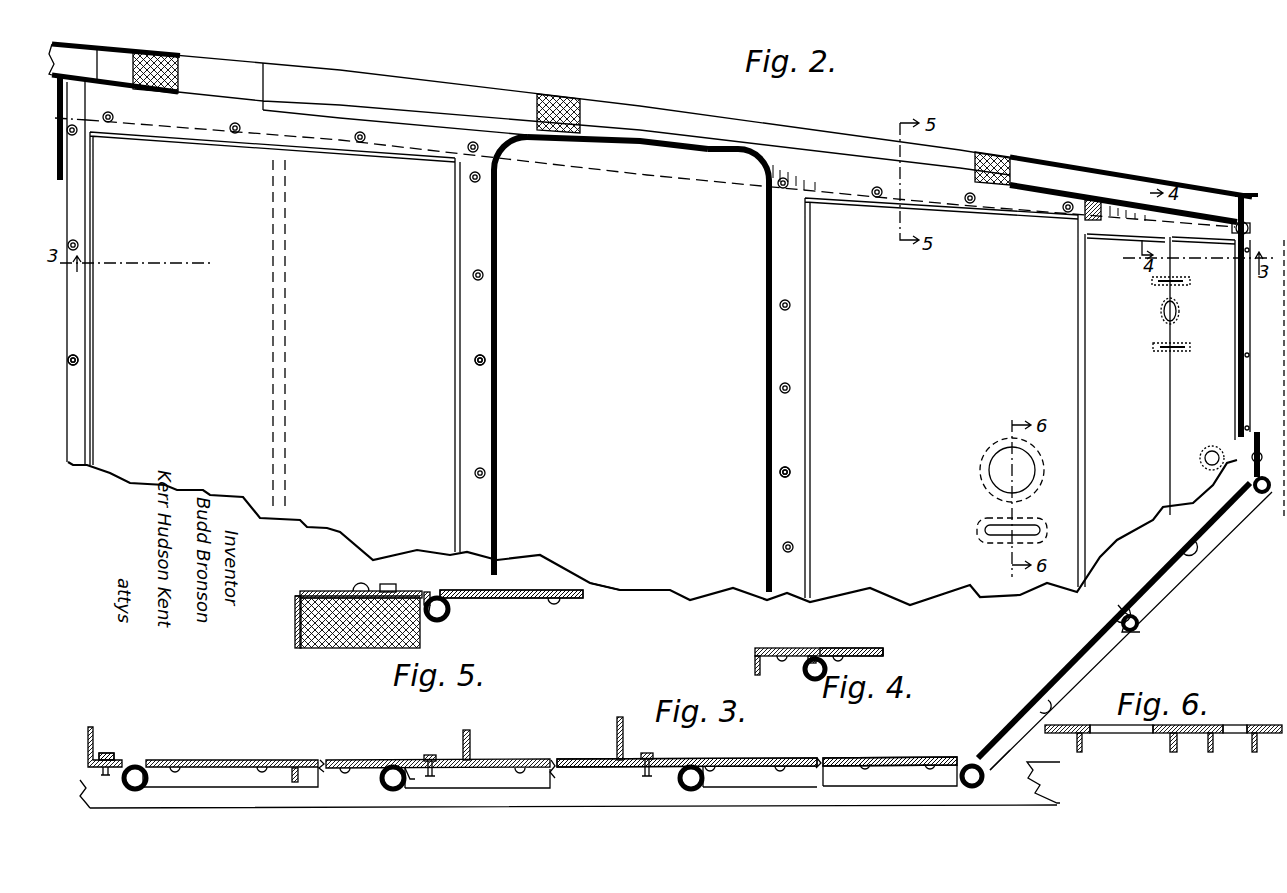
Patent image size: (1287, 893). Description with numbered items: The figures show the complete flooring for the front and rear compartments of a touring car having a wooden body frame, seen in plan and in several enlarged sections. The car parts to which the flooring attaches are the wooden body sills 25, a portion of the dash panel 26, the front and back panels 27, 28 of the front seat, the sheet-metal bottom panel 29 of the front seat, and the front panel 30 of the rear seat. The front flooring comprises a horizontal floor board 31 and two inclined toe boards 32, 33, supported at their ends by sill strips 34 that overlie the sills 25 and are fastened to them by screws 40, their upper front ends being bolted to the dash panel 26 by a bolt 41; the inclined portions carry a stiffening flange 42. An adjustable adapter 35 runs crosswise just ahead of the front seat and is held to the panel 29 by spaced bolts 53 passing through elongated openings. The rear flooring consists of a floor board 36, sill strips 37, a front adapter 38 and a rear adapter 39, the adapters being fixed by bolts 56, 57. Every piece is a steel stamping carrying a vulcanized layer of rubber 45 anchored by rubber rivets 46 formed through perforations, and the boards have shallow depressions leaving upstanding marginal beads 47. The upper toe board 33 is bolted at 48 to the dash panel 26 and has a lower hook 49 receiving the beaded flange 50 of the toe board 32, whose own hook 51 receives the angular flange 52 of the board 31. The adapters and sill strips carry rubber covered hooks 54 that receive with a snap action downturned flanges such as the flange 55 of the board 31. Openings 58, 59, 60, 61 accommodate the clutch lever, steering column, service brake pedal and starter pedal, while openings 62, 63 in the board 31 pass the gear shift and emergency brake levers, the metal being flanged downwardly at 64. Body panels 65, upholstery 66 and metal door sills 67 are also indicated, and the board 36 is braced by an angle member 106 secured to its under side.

In FIG. 2, the wooden body sills 25 is at (697, 180).
In FIG. 3, the wooden body sills 25 is at (1038, 780).
In FIG. 5, the wooden body sills 25 is at (326, 643).
In FIG. 2, the dash panel 26 is at (1239, 388).
In FIG. 2, the front panel for the front seat 27 is at (766, 450).
In FIG. 3, the front panel for the front seat 27 is at (616, 737).
In FIG. 2, the back panel for the front seat 28 is at (503, 455).
In FIG. 3, the back panel for the front seat 28 is at (478, 740).
In FIG. 2, the bottom panel for the front seat 29 is at (630, 562).
In FIG. 3, the bottom panel for the front seat 29 is at (687, 779).
In FIG. 2, the front panel for the rear seat 30 is at (68, 167).
In FIG. 3, the front panel for the rear seat 30 is at (94, 740).
In FIG. 3, the floor board 31 is at (905, 757).
In FIG. 5, the floor board 31 is at (535, 598).
In FIG. 6, the floor board 31 is at (1200, 721).
In FIG. 2, the lower toe board 32 is at (1105, 675).
In FIG. 4, the lower toe board 32 is at (885, 656).
In FIG. 2, the upper toe board 33 is at (1232, 540).
In FIG. 2, the sill strips 34 is at (952, 183).
In FIG. 4, the sill strips 34 is at (755, 652).
In FIG. 5, the sill strips 34 is at (400, 590).
In FIG. 2, the adjustable adapter 35 is at (797, 353).
In FIG. 3, the adjustable adapter 35 is at (700, 758).
In FIG. 2, the floor board 36 is at (275, 342).
In FIG. 3, the floor board 36 is at (262, 760).
In FIG. 2, the sill strips 37 is at (364, 147).
In FIG. 2, the front adapter 38 is at (470, 243).
In FIG. 3, the front adapter 38 is at (412, 781).
In FIG. 2, the rear adapter 39 is at (80, 360).
In FIG. 3, the rear adapter 39 is at (122, 760).
In FIG. 2, the screws 40 is at (1067, 213).
In FIG. 5, the screws 40 is at (385, 582).
In FIG. 2, the bolt 41 is at (1259, 341).
In FIG. 4, the downward flange 42 is at (755, 672).
In FIG. 2, the sheet or layer of rubber 45 is at (1175, 548).
In FIG. 3, the sheet or layer of rubber 45 is at (352, 760).
In FIG. 4, the sheet or layer of rubber 45 is at (862, 648).
In FIG. 5, the sheet or layer of rubber 45 is at (543, 590).
In FIG. 2, the rubber rivets 46 is at (1190, 565).
In FIG. 3, the rubber rivets 46 is at (176, 760).
In FIG. 4, the rubber rivets 46 is at (810, 658).
In FIG. 5, the rubber rivets 46 is at (558, 603).
In FIG. 2, the upstanding marginal beads 47 is at (93, 308).
In FIG. 3, the upstanding marginal beads 47 is at (152, 760).
In FIG. 4, the upstanding marginal beads 47 is at (813, 648).
In FIG. 5, the upstanding marginal beads 47 is at (432, 596).
In FIG. 2, the bolt 48 is at (1270, 474).
In FIG. 2, the groove or hook 49 is at (1138, 628).
In FIG. 2, the bead 50 is at (1127, 635).
In FIG. 3, the rubber covered hook 51 is at (985, 772).
In FIG. 3, the flange 52 is at (971, 786).
In FIG. 2, the bolts 53 is at (792, 474).
In FIG. 3, the bolts 53 is at (643, 776).
In FIG. 3, the rubber covered hook 54 is at (140, 789).
In FIG. 4, the rubber covered hook 54 is at (805, 676).
In FIG. 5, the rubber covered hook 54 is at (450, 613).
In FIG. 3, the downturned flange 55 is at (683, 785).
In FIG. 5, the downturned flange 55 is at (437, 622).
In FIG. 2, the bolts 56 is at (472, 362).
In FIG. 3, the bolts 56 is at (436, 778).
In FIG. 2, the bolts 57 is at (80, 366).
In FIG. 3, the bolts 57 is at (110, 755).
In FIG. 2, the opening 58 is at (1186, 286).
In FIG. 2, the opening 59 is at (1160, 314).
In FIG. 2, the opening 60 is at (1160, 348).
In FIG. 2, the opening 61 is at (1206, 452).
In FIG. 2, the opening 62 is at (990, 470).
In FIG. 6, the opening 62 is at (1100, 725).
In FIG. 2, the opening 63 is at (985, 522).
In FIG. 6, the opening 63 is at (1240, 725).
In FIG. 6, the downward flange 64 is at (1082, 750).
In FIG. 2, the body panels 65 is at (145, 52).
In FIG. 2, the upholstery 66 is at (99, 52).
In FIG. 2, the metal door sills 67 is at (397, 82).
In FIG. 5, the metal door sills 67 is at (328, 592).
In FIG. 2, the angle member 106 is at (287, 408).
In FIG. 3, the angle member 106 is at (295, 783).